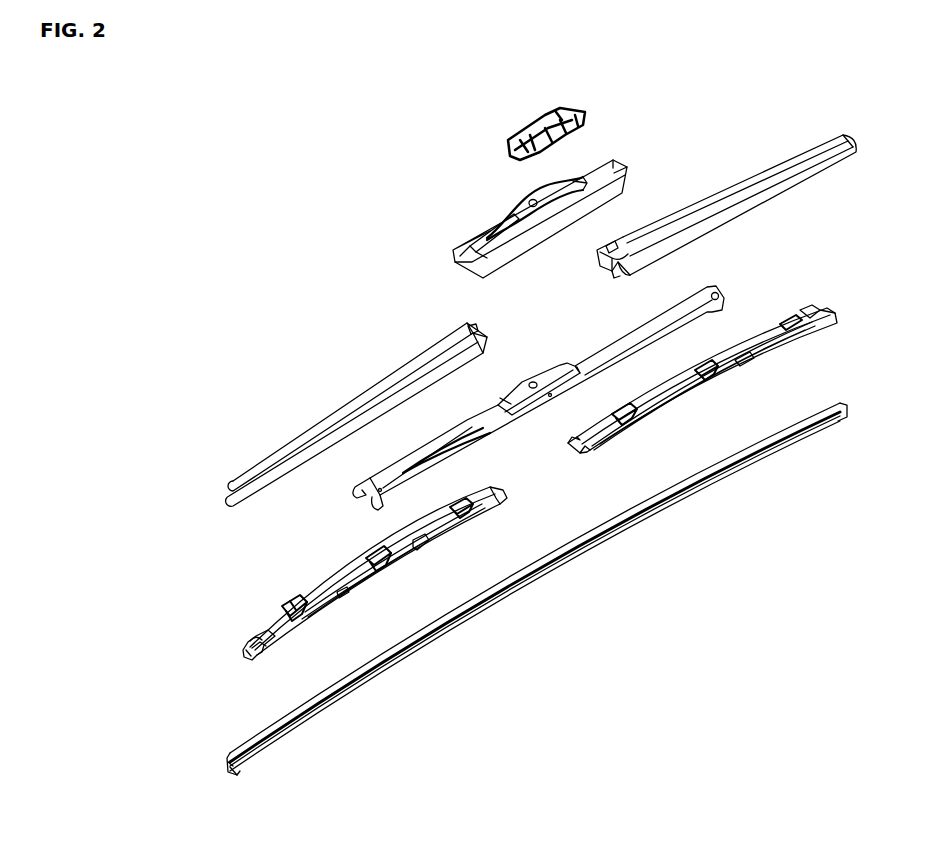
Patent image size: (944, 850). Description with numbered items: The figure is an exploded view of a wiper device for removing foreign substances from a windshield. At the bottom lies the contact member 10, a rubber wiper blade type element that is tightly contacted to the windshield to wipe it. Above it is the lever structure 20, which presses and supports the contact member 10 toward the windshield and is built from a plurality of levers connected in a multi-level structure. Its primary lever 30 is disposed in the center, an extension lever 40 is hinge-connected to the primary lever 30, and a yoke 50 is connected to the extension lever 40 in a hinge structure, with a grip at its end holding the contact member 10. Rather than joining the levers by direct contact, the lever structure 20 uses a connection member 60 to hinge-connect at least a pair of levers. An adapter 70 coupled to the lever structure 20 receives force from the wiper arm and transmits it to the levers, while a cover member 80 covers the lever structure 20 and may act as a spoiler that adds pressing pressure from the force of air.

The contact member 10 is at (780, 446).
The lever structure 20 is at (471, 473).
The primary lever 30 is at (345, 487).
The extension lever 40 is at (323, 588).
The yoke 50 is at (258, 645).
The connection member 60 is at (293, 616).
The adapter 70 is at (604, 165).
The cover member 80 is at (698, 197).